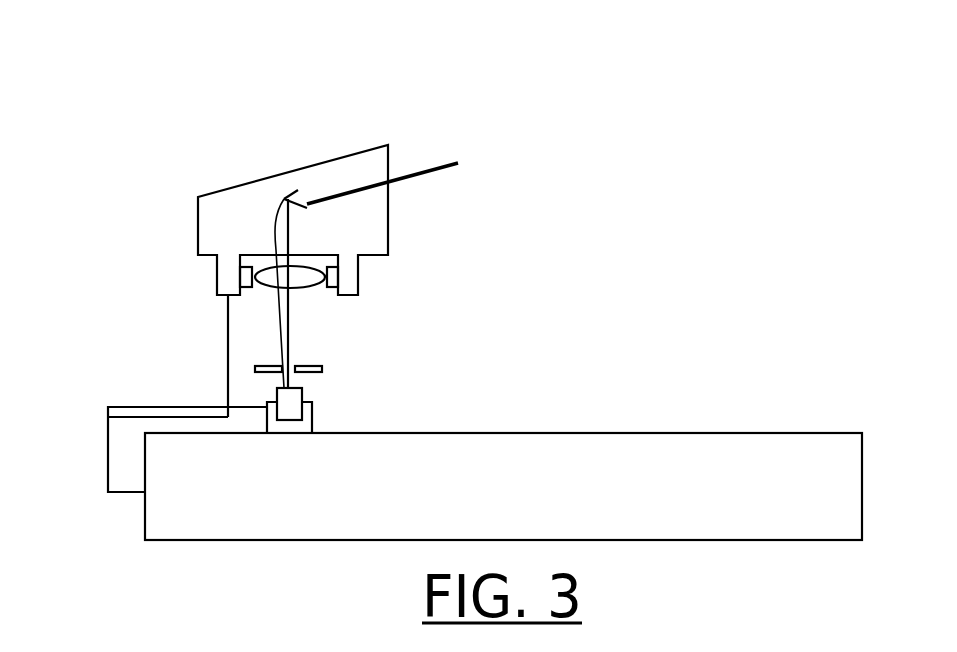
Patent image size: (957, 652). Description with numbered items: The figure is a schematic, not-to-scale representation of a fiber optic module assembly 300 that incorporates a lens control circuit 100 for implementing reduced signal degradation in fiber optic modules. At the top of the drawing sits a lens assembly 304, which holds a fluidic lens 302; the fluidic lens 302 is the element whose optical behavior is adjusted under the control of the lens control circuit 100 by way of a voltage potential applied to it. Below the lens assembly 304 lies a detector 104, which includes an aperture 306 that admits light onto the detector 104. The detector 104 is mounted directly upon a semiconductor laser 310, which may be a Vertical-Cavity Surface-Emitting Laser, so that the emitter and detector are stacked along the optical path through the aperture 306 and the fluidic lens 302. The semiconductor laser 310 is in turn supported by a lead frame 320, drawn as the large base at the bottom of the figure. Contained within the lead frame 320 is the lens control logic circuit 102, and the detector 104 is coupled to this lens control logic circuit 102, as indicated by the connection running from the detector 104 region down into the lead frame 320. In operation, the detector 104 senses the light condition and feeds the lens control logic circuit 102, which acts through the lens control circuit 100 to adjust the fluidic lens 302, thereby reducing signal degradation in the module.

The fiber optic module assembly 300 is at (418, 58).
The fluidic lens 302 is at (262, 267).
The lens assembly 304 is at (333, 275).
The aperture 306 is at (268, 361).
The detector 104 is at (287, 401).
The semiconductor laser 310 is at (317, 418).
The lead frame 320 is at (398, 512).
The lens control logic circuit 102 is at (818, 478).
The lens control circuit 100 is at (700, 262).